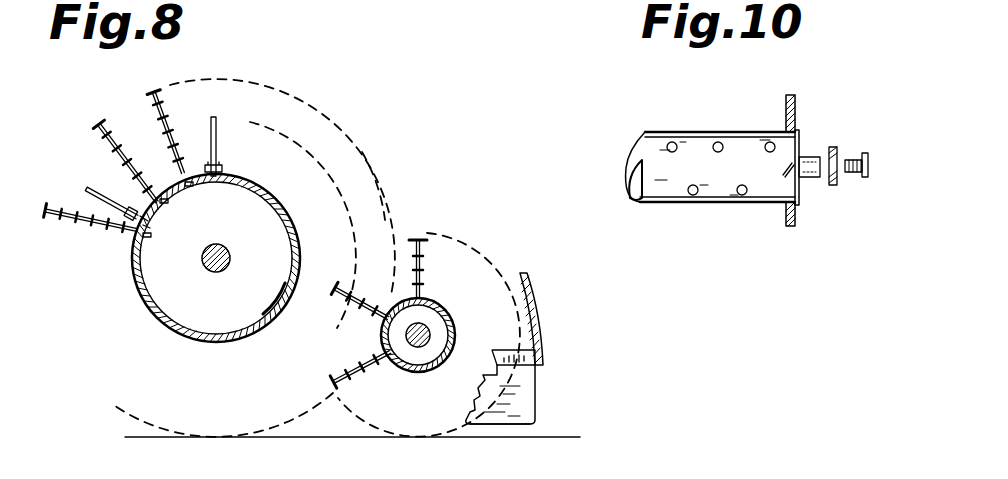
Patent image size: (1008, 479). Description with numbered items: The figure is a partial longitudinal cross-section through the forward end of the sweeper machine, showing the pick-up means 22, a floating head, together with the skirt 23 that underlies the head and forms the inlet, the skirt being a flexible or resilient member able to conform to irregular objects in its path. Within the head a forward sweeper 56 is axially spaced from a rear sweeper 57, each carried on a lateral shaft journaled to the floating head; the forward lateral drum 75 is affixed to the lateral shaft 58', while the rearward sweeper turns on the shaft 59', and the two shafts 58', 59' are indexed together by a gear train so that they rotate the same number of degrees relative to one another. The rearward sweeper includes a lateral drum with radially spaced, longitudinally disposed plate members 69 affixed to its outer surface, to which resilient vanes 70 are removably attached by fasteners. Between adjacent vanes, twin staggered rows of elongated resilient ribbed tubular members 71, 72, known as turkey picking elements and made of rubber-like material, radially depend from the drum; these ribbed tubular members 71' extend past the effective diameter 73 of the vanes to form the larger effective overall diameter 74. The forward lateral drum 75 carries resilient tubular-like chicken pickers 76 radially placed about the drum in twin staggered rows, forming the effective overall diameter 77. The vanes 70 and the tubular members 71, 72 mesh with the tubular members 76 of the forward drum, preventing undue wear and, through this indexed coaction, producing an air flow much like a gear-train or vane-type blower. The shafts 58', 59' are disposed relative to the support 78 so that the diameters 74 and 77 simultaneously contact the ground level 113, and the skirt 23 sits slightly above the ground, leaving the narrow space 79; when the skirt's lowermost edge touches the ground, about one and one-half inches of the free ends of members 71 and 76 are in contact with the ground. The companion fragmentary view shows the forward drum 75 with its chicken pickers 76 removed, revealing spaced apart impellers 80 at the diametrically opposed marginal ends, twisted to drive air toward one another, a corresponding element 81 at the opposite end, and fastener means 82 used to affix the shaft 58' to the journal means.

In FIG. 8, the pick-up means 22 is at (545, 296).
In FIG. 8, the skirt 23 is at (535, 383).
In FIG. 8, the forward sweeper 56 is at (428, 218).
In FIG. 8, the rear sweeper 57 is at (312, 107).
In FIG. 8, the lateral shaft 58' is at (446, 316).
In FIG. 8, the shaft 59' is at (234, 244).
In FIG. 8, the plate members 69 is at (217, 168).
In FIG. 8, the resilient vanes 70 is at (217, 128).
In FIG. 8, the tubular members 71 is at (127, 148).
In FIG. 8, the tubular members 71' is at (122, 212).
In FIG. 8, the tubular members 72 is at (172, 100).
In FIG. 8, the effective diameter of the vanes 73 is at (303, 150).
In FIG. 8, the effective overall diameter 74 is at (372, 172).
In FIG. 8, the forward lateral drum 75 is at (414, 372).
In FIG. 10, the forward lateral drum 75 is at (690, 205).
In FIG. 8, the chicken pickers 76 is at (420, 257).
In FIG. 10, the chicken pickers 76 is at (676, 151).
In FIG. 8, the effective overall diameter 77 is at (490, 273).
In FIG. 8, the support 78 is at (520, 349).
In FIG. 8, the narrow space 79 is at (524, 431).
In FIG. 10, the impellers 80 is at (795, 118).
In FIG. 10, the lower mounting plate 81 is at (797, 213).
In FIG. 10, the fastener means 82 is at (850, 179).
In FIG. 8, the ground level 113 is at (565, 434).